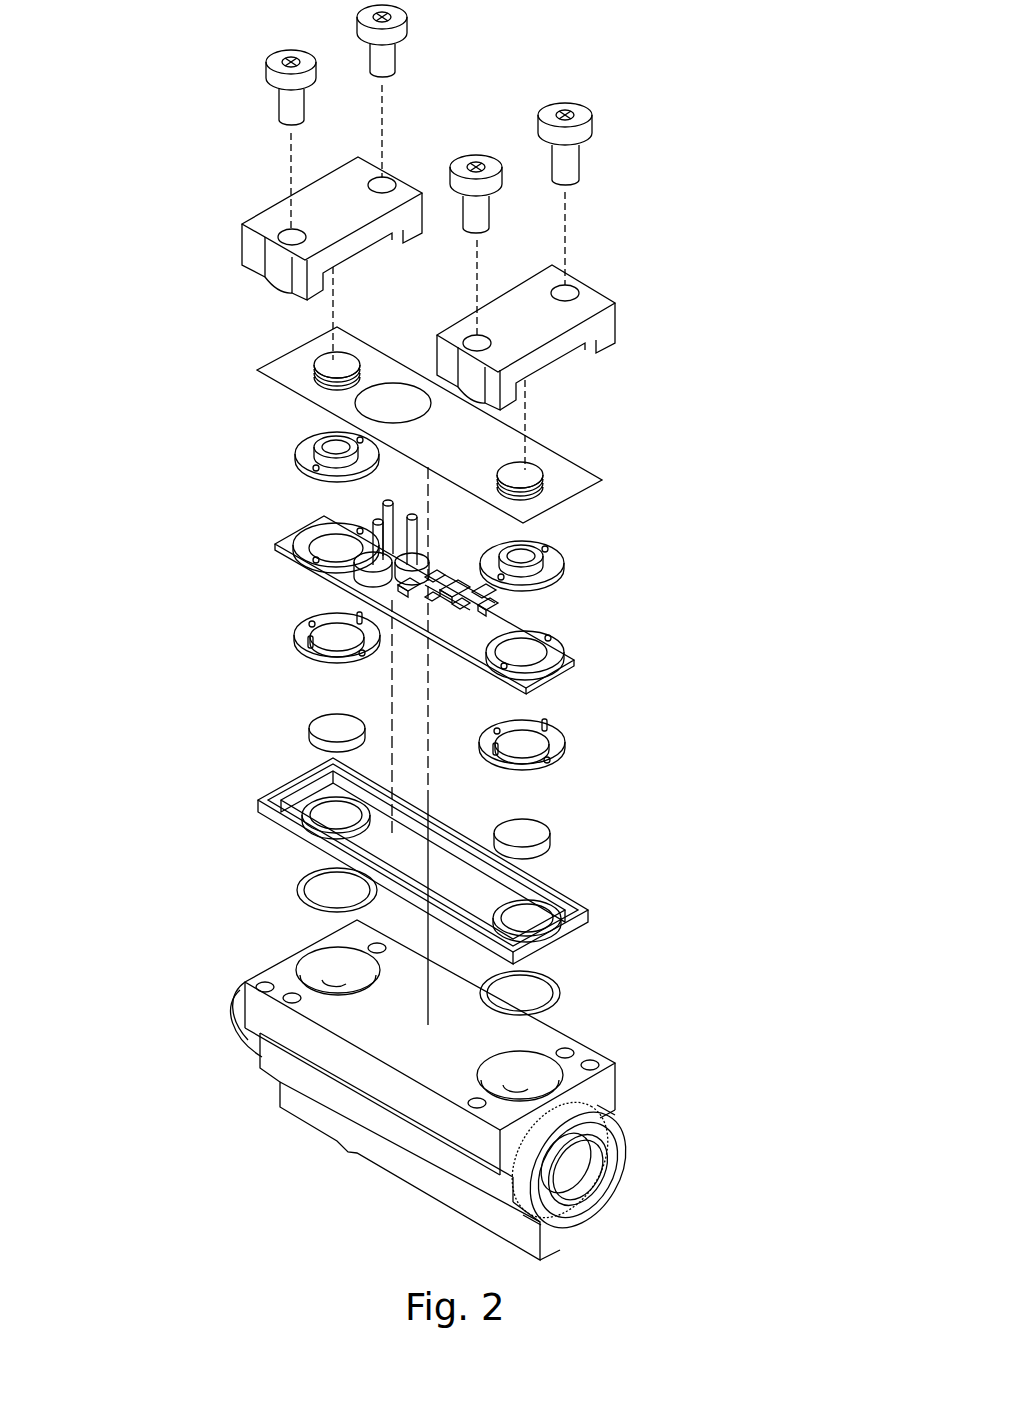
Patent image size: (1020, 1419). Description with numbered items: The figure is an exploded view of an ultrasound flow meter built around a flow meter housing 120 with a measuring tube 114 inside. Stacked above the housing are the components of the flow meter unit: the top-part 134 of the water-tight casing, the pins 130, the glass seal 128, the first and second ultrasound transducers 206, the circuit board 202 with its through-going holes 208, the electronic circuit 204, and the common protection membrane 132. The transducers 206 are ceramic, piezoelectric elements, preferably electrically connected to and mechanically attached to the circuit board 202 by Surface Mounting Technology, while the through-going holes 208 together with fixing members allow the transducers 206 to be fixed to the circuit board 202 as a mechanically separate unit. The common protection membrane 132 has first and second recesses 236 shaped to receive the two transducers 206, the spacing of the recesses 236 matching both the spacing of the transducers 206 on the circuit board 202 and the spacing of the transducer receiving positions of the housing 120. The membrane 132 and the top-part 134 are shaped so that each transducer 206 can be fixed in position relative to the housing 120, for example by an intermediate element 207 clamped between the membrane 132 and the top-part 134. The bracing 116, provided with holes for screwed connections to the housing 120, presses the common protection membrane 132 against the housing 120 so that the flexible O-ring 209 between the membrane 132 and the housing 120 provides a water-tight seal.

The measuring tube 114 is at (640, 1212).
The bracing 116 is at (588, 303).
The flow meter housing 120 is at (343, 1063).
The glass seal 128 is at (460, 605).
The pins 130 is at (412, 538).
The common protection membrane 132 is at (490, 887).
The top-part of the water-tight casing 134 is at (555, 473).
The circuit board 202 is at (303, 550).
The electronic circuit 204 is at (400, 583).
The ultrasound transducers 206 is at (353, 732).
The intermediate element 207 is at (367, 458).
The through-going holes 208 is at (527, 658).
The flexible O-ring 209 is at (493, 978).
The first and second recesses 236 is at (532, 928).